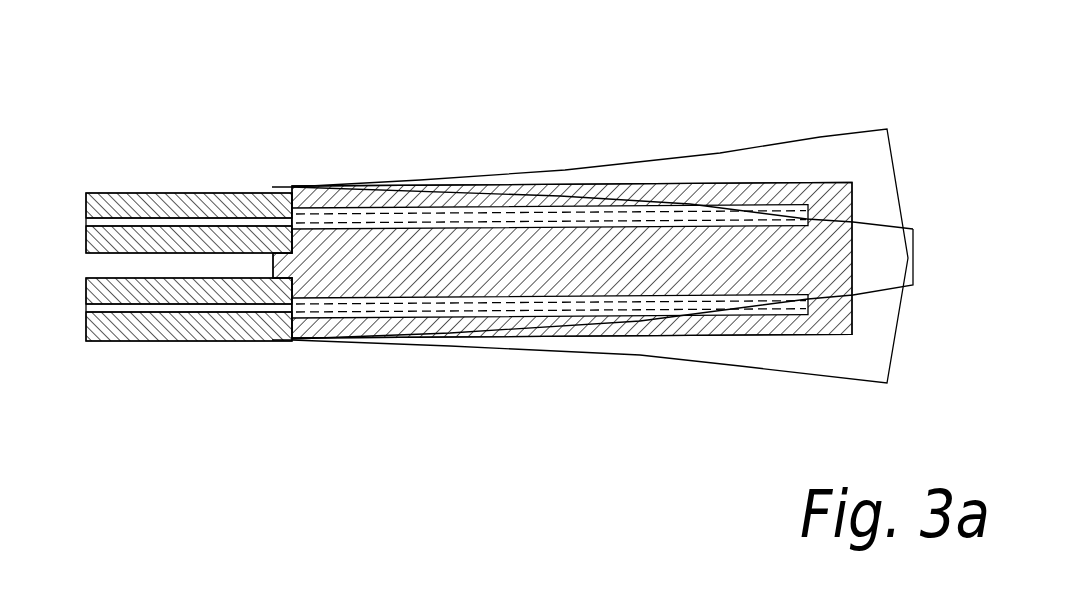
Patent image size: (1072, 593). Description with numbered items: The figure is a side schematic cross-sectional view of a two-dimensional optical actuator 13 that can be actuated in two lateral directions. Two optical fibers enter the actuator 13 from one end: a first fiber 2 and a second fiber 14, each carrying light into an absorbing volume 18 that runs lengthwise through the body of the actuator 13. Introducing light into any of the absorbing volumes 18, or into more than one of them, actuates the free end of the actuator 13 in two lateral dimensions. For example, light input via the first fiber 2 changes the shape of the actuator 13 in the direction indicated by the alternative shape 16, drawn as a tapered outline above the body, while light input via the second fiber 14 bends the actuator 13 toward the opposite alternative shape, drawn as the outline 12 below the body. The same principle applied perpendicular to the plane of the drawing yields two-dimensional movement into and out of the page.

The first fiber 2 is at (172, 307).
The ferrule housing 12 is at (809, 348).
The actuator 13 is at (453, 327).
The second fiber 14 is at (202, 218).
The alternative shape 16 is at (750, 171).
The absorbing volume 18 is at (563, 306).